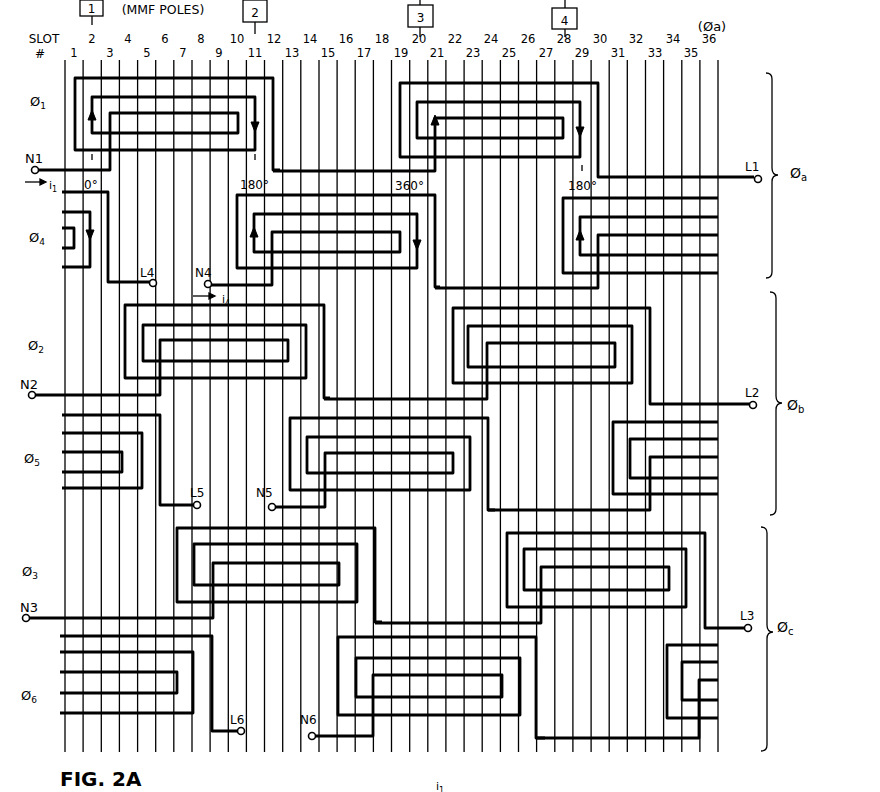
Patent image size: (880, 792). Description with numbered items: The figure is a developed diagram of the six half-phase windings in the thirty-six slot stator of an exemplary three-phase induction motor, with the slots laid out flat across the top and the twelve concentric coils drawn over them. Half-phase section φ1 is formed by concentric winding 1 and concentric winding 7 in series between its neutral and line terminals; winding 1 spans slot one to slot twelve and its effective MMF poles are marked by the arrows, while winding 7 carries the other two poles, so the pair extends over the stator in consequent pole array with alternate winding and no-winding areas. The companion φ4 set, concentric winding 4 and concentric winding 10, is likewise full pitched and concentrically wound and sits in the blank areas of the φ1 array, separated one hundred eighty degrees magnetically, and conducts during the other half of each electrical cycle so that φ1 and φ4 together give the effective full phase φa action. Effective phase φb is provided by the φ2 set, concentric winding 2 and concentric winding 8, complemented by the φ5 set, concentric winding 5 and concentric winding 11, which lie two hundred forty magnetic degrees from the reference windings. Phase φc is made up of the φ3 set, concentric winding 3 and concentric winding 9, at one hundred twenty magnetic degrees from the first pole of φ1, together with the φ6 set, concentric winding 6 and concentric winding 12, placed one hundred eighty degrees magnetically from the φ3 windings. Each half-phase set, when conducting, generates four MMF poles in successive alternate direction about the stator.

The concentric winding -1- 1 is at (159, 124).
The concentric winding -2- 2 is at (182, 351).
The concentric winding -3- 3 is at (205, 575).
The concentric winding -4- 4 is at (325, 241).
The concentric winding -5- 5 is at (385, 464).
The concentric winding -6- 6 is at (430, 687).
The concentric winding -7- 7 is at (513, 130).
The concentric winding -8- 8 is at (537, 356).
The concentric winding -9- 9 is at (560, 580).
The concentric winding -10- 10 is at (390, 240).
The concentric winding -11- 11 is at (384, 462).
The concentric winding -12- 12 is at (391, 687).